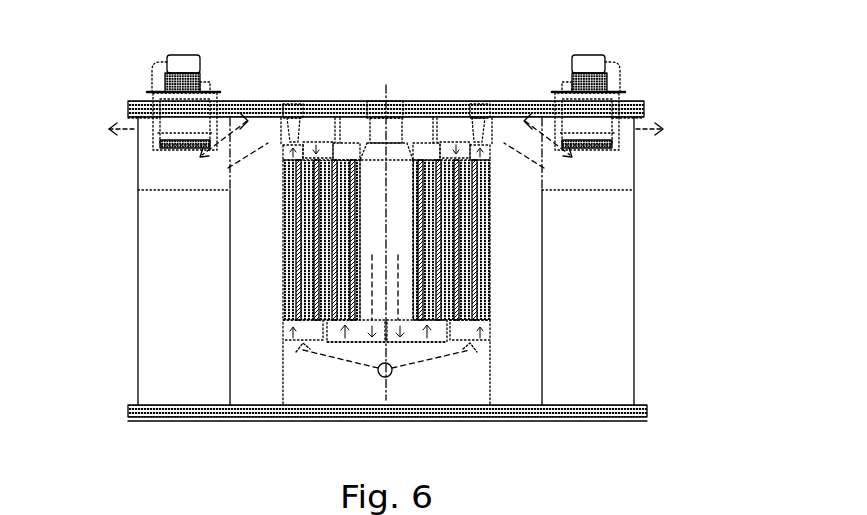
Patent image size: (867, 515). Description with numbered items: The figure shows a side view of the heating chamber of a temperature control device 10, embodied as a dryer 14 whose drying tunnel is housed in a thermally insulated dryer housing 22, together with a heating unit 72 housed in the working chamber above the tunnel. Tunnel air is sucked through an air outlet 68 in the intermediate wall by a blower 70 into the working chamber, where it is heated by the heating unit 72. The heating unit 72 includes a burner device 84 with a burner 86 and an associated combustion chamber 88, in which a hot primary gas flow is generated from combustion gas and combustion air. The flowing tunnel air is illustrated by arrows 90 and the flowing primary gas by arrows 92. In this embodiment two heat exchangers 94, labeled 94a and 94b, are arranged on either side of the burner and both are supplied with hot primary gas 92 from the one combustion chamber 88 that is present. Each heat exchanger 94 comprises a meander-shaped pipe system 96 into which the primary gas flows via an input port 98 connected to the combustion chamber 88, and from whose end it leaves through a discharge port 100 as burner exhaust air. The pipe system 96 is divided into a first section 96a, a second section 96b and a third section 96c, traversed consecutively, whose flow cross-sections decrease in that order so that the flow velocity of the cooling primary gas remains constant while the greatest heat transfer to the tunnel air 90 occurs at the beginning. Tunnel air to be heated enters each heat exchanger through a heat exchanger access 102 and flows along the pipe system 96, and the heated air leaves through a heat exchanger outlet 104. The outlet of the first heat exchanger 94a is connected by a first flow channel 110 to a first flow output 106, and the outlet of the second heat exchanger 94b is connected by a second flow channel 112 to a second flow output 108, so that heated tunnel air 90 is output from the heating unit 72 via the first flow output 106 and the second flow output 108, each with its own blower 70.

The temperature control device 10 is at (388, 236).
The dryer 14 is at (389, 261).
The dryer housing 22 is at (547, 418).
The air outlet 68 is at (384, 378).
The blower 70 is at (184, 63).
The heating unit 72 is at (258, 332).
The burner device 84 is at (372, 88).
The burner 86 is at (393, 130).
The combustion chamber 88 is at (403, 215).
The tunnel air 90 is at (268, 147).
The primary gas 92 is at (452, 147).
The heat exchanger 94 is at (391, 246).
The first heat exchanger 94a is at (283, 257).
The second heat exchanger 94b is at (492, 285).
The meander-shaped pipe system 96 is at (292, 234).
The first section 96a is at (287, 312).
The second section 96b is at (323, 283).
The third section 96c is at (342, 210).
The input port 98 is at (360, 343).
The discharge port 100 is at (297, 125).
The heat exchanger access 102 is at (283, 350).
The heat exchanger outlet 104 is at (281, 132).
The first flow output 106 is at (138, 130).
The second flow output 108 is at (640, 131).
The first flow channel 110 is at (160, 178).
The second flow channel 112 is at (617, 177).